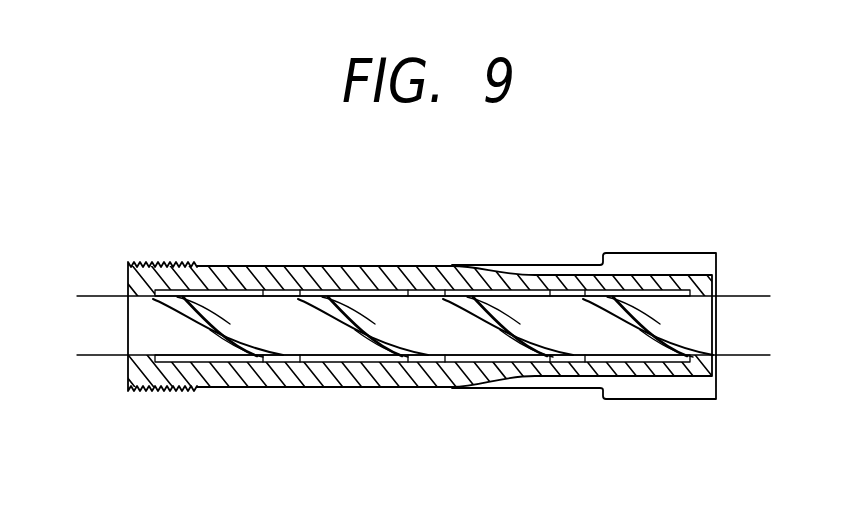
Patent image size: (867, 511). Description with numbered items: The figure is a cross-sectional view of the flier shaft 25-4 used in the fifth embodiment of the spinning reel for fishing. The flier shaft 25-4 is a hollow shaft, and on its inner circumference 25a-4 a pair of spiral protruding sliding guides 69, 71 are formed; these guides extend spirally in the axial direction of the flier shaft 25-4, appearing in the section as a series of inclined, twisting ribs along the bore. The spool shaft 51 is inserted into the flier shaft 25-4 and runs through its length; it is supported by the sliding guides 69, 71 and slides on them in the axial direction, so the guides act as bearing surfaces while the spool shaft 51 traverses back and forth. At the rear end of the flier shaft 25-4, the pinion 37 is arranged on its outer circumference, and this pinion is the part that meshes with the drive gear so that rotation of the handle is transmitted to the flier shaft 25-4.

The flier shaft 25-4 is at (376, 258).
The inner circumference of the flier shaft 25a-4 is at (247, 300).
The pinion 37 is at (683, 253).
The spool shaft 51 is at (97, 308).
The sliding guide 69 is at (212, 328).
The sliding guide 71 is at (364, 334).